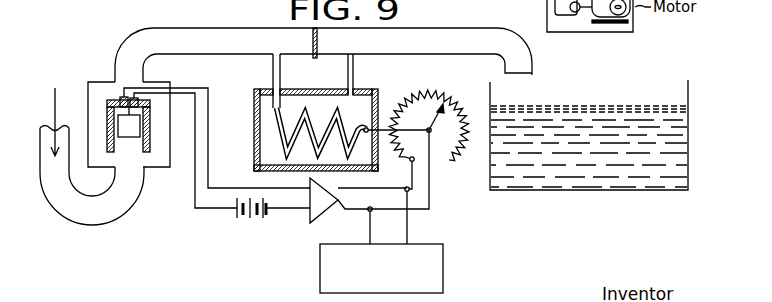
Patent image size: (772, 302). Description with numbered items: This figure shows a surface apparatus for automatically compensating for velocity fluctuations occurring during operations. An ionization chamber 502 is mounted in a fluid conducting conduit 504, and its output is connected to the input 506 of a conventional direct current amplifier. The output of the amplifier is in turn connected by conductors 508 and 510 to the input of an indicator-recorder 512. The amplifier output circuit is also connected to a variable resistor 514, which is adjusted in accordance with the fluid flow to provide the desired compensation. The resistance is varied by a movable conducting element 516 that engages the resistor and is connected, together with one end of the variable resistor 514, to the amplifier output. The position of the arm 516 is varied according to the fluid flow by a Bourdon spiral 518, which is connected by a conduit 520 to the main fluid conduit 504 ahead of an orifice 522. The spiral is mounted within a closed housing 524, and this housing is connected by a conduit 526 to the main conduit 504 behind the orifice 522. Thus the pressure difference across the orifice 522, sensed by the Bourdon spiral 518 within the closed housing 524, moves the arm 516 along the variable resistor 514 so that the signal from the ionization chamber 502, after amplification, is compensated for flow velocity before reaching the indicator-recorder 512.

The ionization chamber 502 is at (112, 106).
The fluid conducting conduit 504 is at (182, 42).
The amplifier input 506 is at (312, 218).
The conductor 508 is at (346, 196).
The conductor 510 is at (408, 232).
The indicator-recorder 512 is at (443, 258).
The variable resistor 514 is at (452, 147).
The movable conducting element 516 is at (460, 93).
The Bourdon spiral 518 is at (305, 113).
The conduit 520 is at (268, 75).
The orifice 522 is at (318, 43).
The closed housing 524 is at (254, 134).
The conduit 526 is at (358, 75).